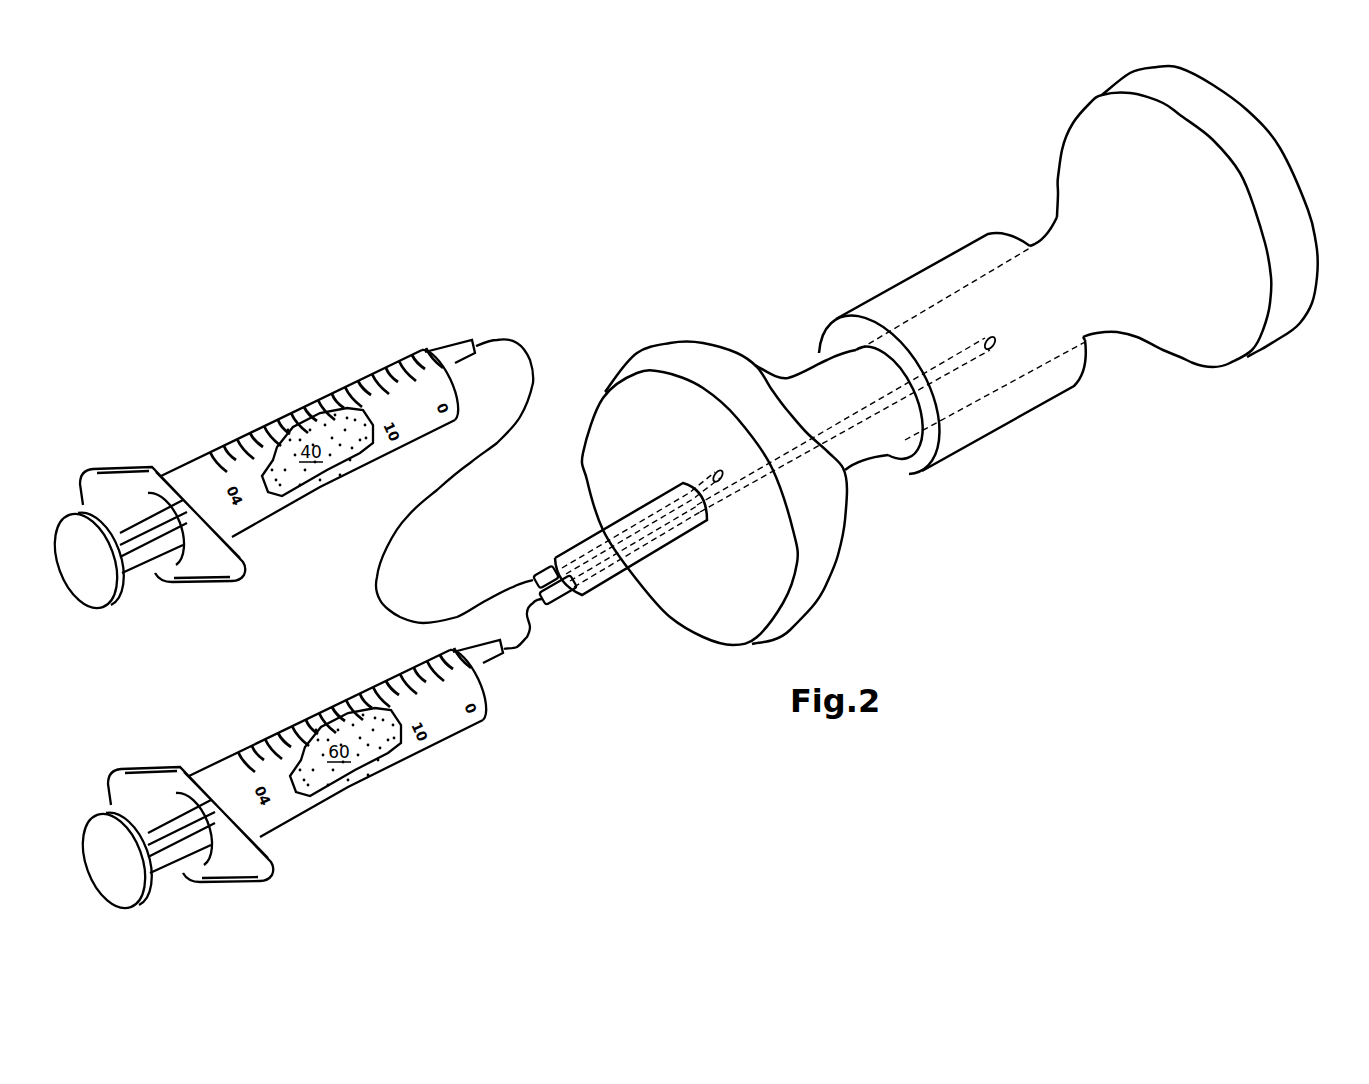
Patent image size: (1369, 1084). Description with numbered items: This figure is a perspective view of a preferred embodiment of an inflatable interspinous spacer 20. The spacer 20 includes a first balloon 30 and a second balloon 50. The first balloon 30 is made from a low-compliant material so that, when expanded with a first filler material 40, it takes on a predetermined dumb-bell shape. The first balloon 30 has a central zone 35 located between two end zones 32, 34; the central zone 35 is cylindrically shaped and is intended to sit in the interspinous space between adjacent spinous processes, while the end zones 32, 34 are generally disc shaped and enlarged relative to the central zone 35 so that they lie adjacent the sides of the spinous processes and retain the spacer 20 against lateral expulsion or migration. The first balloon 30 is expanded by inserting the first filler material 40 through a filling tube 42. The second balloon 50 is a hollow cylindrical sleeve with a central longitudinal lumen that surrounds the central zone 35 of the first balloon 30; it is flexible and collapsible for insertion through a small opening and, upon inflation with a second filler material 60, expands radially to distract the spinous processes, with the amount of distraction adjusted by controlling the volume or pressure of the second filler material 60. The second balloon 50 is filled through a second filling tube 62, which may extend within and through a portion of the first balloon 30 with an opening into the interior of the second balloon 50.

The spacer 20 is at (833, 254).
The first balloon 30 is at (602, 370).
The end zone 32 is at (1208, 108).
The end zone 34 is at (677, 357).
The central zone 35 is at (863, 368).
The first filler material 40 is at (1270, 184).
The filling tube 42 is at (543, 575).
The second balloon 50 is at (897, 283).
The second filler material 60 is at (956, 272).
The second filling tube 62 is at (557, 591).